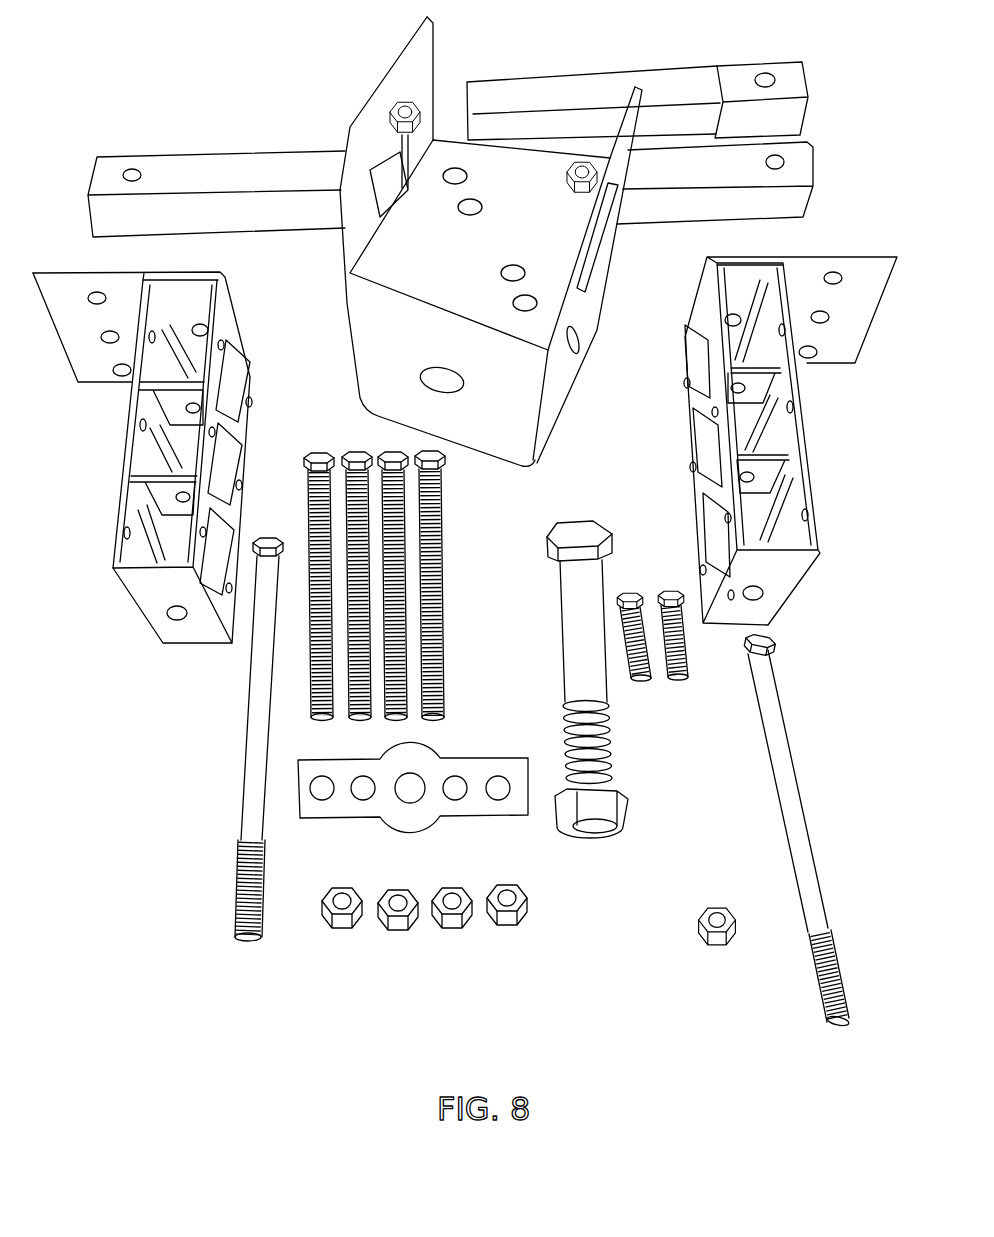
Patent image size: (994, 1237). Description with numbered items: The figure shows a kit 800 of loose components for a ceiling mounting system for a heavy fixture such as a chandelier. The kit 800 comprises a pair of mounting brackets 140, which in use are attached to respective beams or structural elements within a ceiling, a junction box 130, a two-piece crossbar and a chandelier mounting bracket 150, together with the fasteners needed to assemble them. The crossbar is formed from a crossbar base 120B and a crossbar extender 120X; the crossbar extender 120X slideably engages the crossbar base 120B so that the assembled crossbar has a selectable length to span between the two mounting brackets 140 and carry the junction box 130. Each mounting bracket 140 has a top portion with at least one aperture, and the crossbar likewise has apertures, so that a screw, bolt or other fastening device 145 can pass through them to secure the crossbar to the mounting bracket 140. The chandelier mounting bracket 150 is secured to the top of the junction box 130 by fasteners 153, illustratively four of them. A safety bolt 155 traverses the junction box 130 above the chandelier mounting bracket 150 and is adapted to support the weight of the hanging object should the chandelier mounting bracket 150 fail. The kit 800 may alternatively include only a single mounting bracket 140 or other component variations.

The crossbar extender 120X is at (593, 85).
The crossbar base 120B is at (813, 200).
The junction box 130 is at (553, 425).
The mounting bracket 140 is at (218, 312).
The fastening device 145 is at (243, 940).
The chandelier mounting bracket 150 is at (470, 757).
The fastener 153 is at (447, 558).
The safety bolt 155 is at (577, 522).
The kit 800 is at (570, 958).